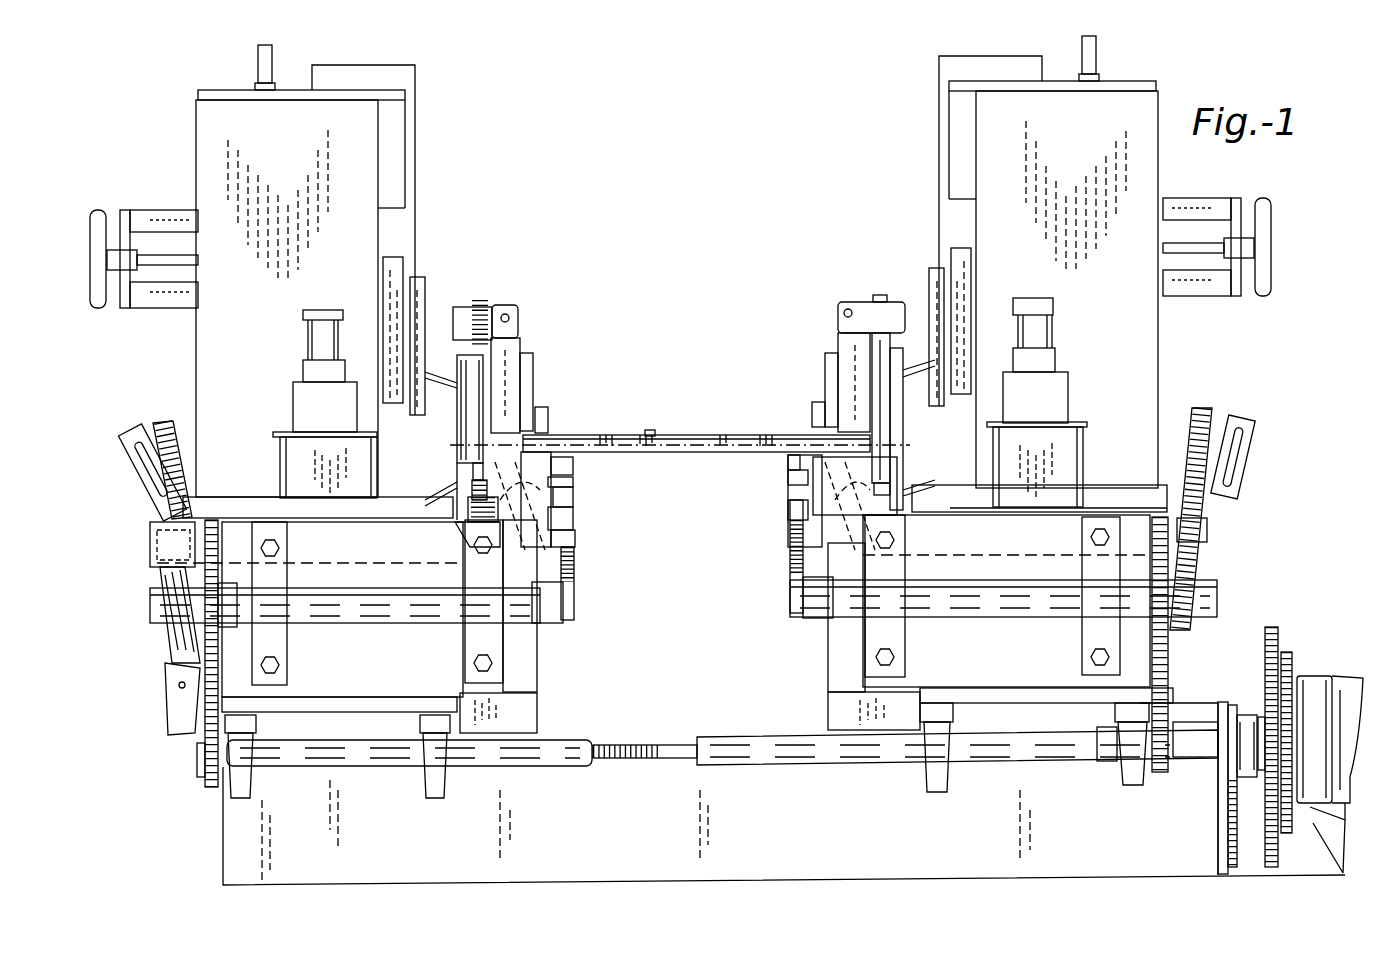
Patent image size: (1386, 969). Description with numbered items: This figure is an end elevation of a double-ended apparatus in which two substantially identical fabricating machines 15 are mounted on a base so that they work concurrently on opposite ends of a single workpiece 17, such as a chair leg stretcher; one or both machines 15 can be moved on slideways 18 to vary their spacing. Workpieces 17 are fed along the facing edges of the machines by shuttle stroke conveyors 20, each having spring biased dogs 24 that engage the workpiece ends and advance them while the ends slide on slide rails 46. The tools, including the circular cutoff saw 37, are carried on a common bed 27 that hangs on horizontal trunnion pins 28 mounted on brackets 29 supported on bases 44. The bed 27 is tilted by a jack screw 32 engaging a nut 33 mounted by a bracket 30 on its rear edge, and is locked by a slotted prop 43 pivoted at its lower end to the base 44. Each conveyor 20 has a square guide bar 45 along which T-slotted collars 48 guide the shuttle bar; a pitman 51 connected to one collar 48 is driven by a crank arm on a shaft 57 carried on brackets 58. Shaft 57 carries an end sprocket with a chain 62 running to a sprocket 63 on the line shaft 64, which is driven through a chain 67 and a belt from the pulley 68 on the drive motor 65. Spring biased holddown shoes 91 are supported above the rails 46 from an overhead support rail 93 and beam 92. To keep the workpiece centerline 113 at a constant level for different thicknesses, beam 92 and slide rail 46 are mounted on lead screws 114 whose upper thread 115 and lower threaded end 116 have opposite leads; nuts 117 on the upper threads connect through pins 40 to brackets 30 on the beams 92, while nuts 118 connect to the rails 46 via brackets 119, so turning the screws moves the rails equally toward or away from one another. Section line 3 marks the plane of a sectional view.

The section line 3- 3 is at (743, 298).
The fabricating machine 15 is at (467, 148).
The workpiece 17 is at (705, 440).
The slideway 18 is at (640, 745).
The shuttle stroke conveyor 20 is at (775, 500).
The spring biased dog 24 is at (560, 462).
The bed 27 is at (320, 554).
The trunnion pin 28 is at (560, 478).
The bracket 29 is at (530, 672).
The bracket 30 is at (515, 345).
The jack screw 32 is at (165, 423).
The nut 33 is at (1208, 527).
The circular cutoff saw 37 is at (537, 392).
The pin 40 is at (510, 312).
The slotted prop 43 is at (128, 432).
The base 44 is at (308, 748).
The guide bar 45 is at (566, 492).
The slide rail 46 is at (565, 532).
The collar 48 is at (560, 506).
The pitman 51 is at (566, 598).
The shaft 57 is at (357, 605).
The bracket 58 is at (505, 640).
The chain 62 is at (1145, 780).
The sprocket 63 is at (1165, 770).
The line shaft 64 is at (560, 735).
The drive motor 65 is at (1345, 678).
The chain 67 is at (1273, 627).
The pulley 68 is at (1290, 660).
The holddown shoe 91 is at (545, 458).
The beam 92 is at (530, 362).
The support rail 93 is at (545, 410).
The centerline 113 is at (650, 437).
The lead screw 114 is at (480, 425).
The upper thread 115 is at (488, 318).
The lower threaded end 116 is at (500, 547).
The nut 117 is at (472, 305).
The nut 118 is at (480, 517).
The bracket 119 is at (576, 560).